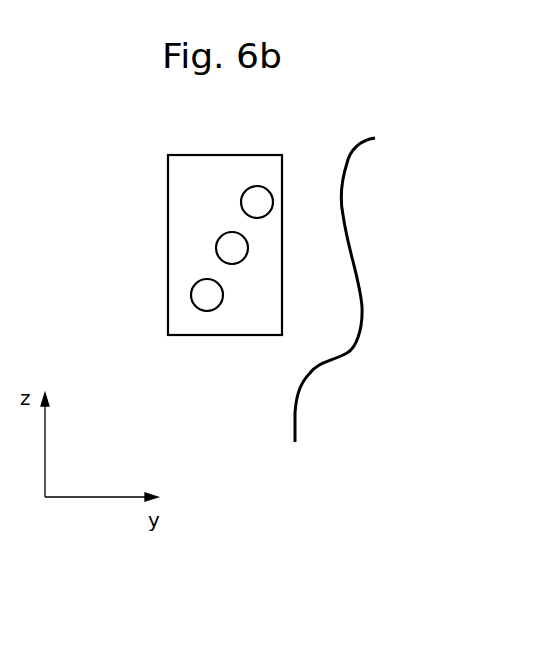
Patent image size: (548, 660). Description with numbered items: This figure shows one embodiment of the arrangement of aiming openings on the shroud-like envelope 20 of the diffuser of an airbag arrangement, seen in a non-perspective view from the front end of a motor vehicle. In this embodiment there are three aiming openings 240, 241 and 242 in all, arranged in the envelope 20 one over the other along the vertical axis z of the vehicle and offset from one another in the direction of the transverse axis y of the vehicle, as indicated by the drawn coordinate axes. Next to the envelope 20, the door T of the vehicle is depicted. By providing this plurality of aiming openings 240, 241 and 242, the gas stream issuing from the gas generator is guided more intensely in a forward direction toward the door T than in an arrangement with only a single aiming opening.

The envelope 20 is at (211, 343).
The aiming opening 240 is at (252, 203).
The aiming opening 241 is at (228, 248).
The aiming opening 242 is at (203, 292).
The door T is at (357, 270).